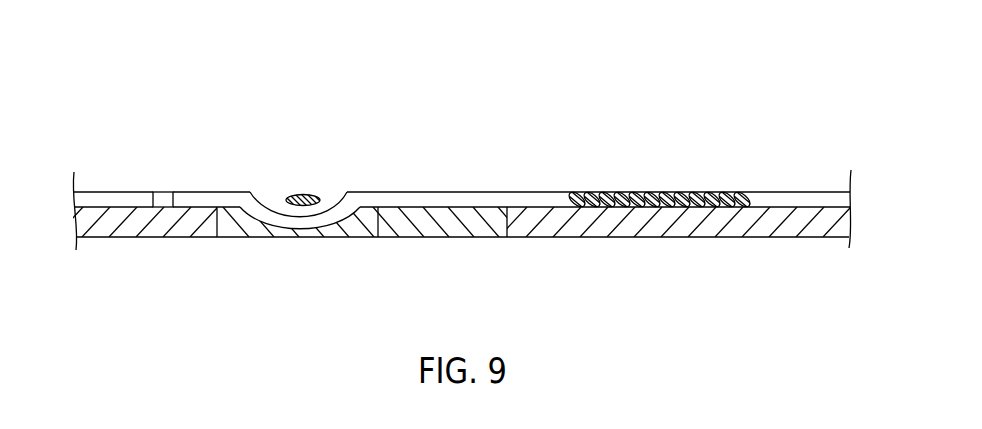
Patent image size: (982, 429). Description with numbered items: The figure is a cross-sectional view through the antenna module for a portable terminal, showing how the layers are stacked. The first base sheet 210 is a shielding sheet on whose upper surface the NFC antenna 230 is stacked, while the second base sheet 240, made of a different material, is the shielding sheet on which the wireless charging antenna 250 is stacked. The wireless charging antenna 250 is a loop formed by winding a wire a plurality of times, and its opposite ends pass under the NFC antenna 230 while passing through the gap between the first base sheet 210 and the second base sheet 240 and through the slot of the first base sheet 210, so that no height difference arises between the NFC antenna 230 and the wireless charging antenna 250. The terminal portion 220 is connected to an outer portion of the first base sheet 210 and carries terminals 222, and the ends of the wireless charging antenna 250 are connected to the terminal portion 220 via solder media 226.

The first base sheet 210 is at (460, 237).
The terminal portion 220 is at (150, 237).
The terminals 222 is at (104, 197).
The solder media 226 is at (164, 197).
The NFC antenna 230 is at (316, 200).
The second base sheet 240 is at (612, 237).
The wireless charging antenna 250 is at (222, 197).